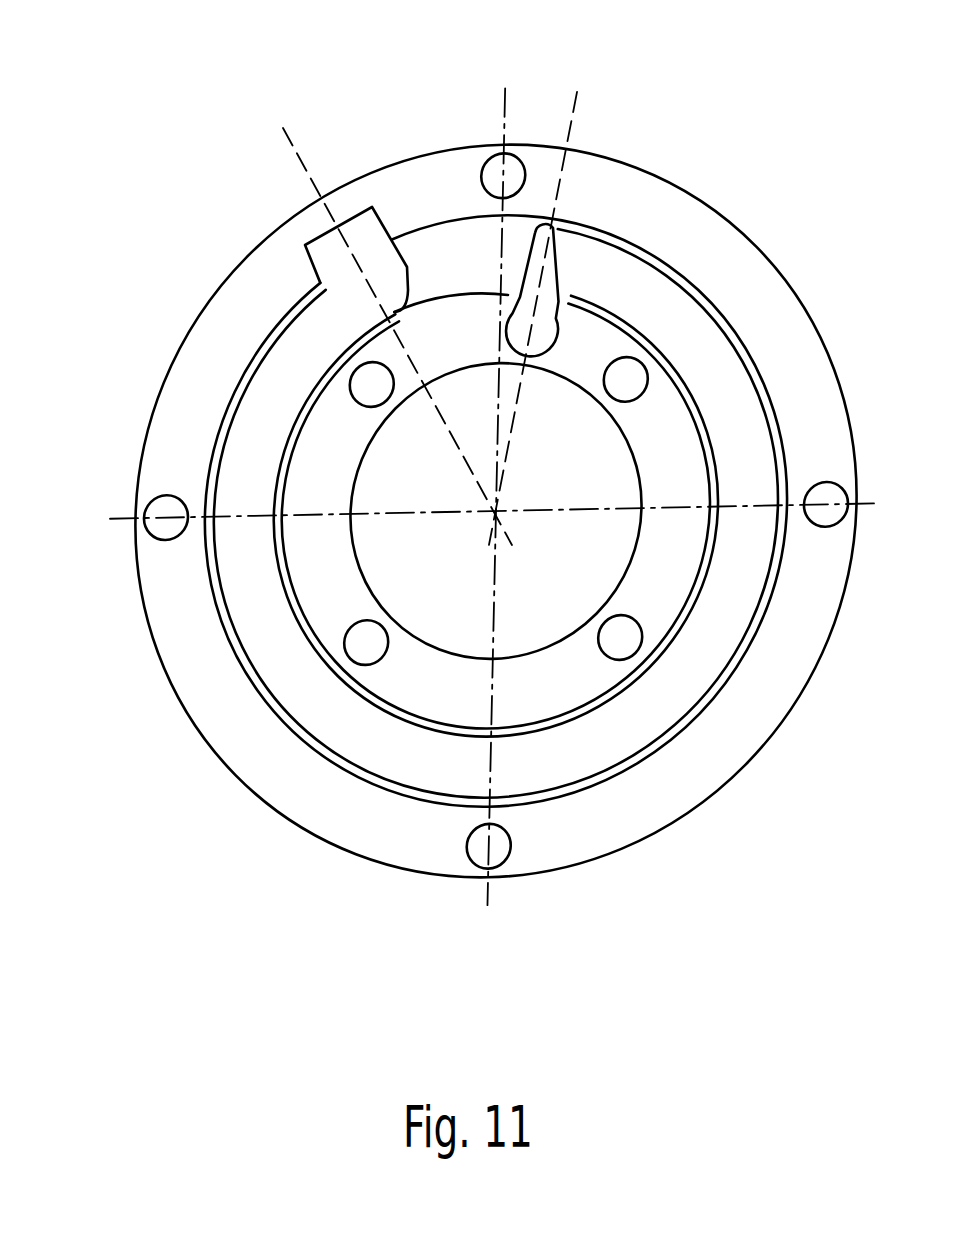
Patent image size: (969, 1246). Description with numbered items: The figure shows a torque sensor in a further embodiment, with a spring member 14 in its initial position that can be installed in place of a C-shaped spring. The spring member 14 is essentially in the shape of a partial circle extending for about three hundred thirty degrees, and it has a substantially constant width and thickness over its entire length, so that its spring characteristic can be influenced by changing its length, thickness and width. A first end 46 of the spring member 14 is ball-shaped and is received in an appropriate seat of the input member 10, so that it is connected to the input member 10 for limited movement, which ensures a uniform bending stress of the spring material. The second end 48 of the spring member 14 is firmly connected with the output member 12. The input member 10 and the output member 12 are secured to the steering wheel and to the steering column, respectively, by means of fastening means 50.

The input member 10 is at (313, 603).
The output member 12 is at (173, 450).
The spring member 14 is at (342, 743).
The first end 46 is at (543, 330).
The second end 48 is at (368, 223).
The fastening means 50 is at (137, 497).